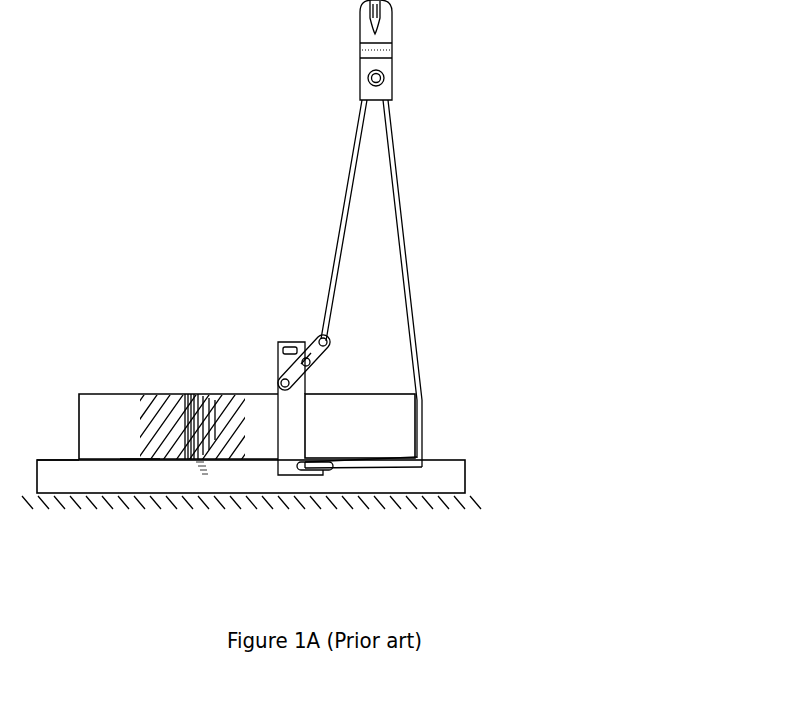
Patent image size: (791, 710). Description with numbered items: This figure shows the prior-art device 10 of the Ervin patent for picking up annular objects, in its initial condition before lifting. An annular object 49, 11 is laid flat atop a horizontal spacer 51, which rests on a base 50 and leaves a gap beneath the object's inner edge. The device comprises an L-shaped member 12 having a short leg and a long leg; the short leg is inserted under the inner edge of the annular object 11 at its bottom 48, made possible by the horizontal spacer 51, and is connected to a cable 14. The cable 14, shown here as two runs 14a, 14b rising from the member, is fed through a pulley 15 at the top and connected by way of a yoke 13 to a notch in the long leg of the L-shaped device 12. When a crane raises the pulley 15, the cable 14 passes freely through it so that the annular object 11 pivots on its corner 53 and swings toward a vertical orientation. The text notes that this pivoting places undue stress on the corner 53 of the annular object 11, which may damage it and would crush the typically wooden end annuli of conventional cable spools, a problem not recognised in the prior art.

The prior art tipping device 10 is at (404, 138).
The pulley 15 is at (393, 33).
The cable 14 is at (412, 320).
The first arm 14a is at (402, 203).
The second arm 14b is at (352, 165).
The yoke 13 is at (310, 338).
The L-shaped member 12 is at (280, 433).
The annular object 49 is at (101, 393).
The annular object 11 is at (149, 405).
The corner 53 is at (79, 458).
The base plate 50 is at (108, 485).
The block bottom interface 48 is at (137, 462).
The horizontal spacer 51 is at (187, 482).